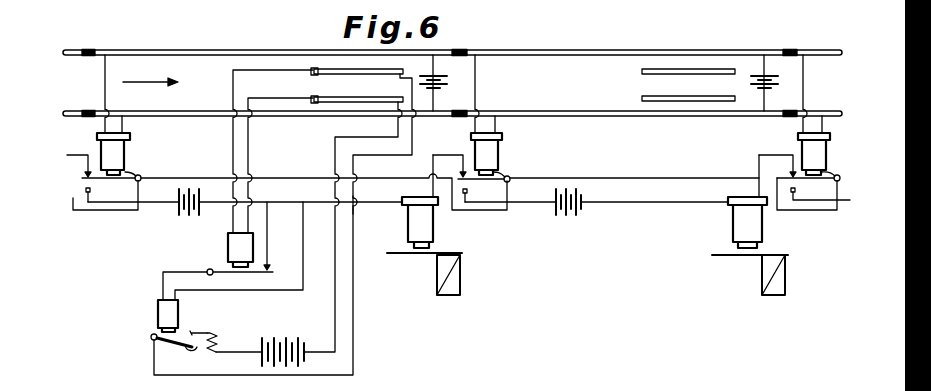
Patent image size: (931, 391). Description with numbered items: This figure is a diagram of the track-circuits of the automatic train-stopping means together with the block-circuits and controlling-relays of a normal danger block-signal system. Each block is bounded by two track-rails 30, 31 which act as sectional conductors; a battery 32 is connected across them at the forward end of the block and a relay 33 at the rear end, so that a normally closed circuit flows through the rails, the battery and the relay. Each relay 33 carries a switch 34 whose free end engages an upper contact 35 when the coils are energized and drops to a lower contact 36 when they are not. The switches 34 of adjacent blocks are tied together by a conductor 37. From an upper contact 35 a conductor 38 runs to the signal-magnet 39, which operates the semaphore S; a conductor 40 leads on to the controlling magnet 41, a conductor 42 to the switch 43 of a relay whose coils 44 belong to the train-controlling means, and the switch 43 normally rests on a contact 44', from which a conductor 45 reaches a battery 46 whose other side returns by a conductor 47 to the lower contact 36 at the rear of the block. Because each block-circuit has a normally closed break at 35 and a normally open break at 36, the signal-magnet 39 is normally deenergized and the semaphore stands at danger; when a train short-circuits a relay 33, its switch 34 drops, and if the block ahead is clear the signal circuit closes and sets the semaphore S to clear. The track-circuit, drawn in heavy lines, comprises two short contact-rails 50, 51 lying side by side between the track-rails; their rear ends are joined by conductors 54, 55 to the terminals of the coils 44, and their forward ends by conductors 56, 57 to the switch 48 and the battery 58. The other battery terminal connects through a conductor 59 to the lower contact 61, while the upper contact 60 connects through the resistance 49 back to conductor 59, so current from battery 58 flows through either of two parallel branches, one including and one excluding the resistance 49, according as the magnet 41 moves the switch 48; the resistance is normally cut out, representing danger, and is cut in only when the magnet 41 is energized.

The track-rail 30 is at (452, 42).
The track-rail 31 is at (452, 102).
The battery 32 is at (608, 83).
The relay 33 is at (835, 147).
The switch 34 is at (141, 176).
The upper contact 35 is at (791, 172).
The lower contact 36 is at (90, 190).
The conductor 37 is at (455, 185).
The conductor 38 is at (594, 165).
The signal-magnet 39 is at (584, 222).
The conductor 40 is at (355, 206).
The controlling magnet 41 is at (151, 316).
The conductor 42 is at (215, 274).
The switch 43 is at (226, 268).
The relay coils 44 is at (240, 250).
The contact 44' is at (283, 236).
The conductor 45 is at (269, 232).
The battery 46 is at (369, 213).
The conductor 47 is at (408, 199).
The switch 48 is at (170, 343).
The resistance 49 is at (216, 338).
The contact-rail 50 is at (327, 73).
The contact-rail 51 is at (370, 90).
The conductor 54 is at (273, 150).
The conductor 55 is at (280, 156).
The conductor 56 is at (354, 296).
The conductor 57 is at (336, 252).
The battery 58 is at (283, 340).
The conductor 59 is at (238, 363).
The upper contact 60 is at (190, 332).
The lower contact 61 is at (187, 348).
The semaphore S is at (596, 274).